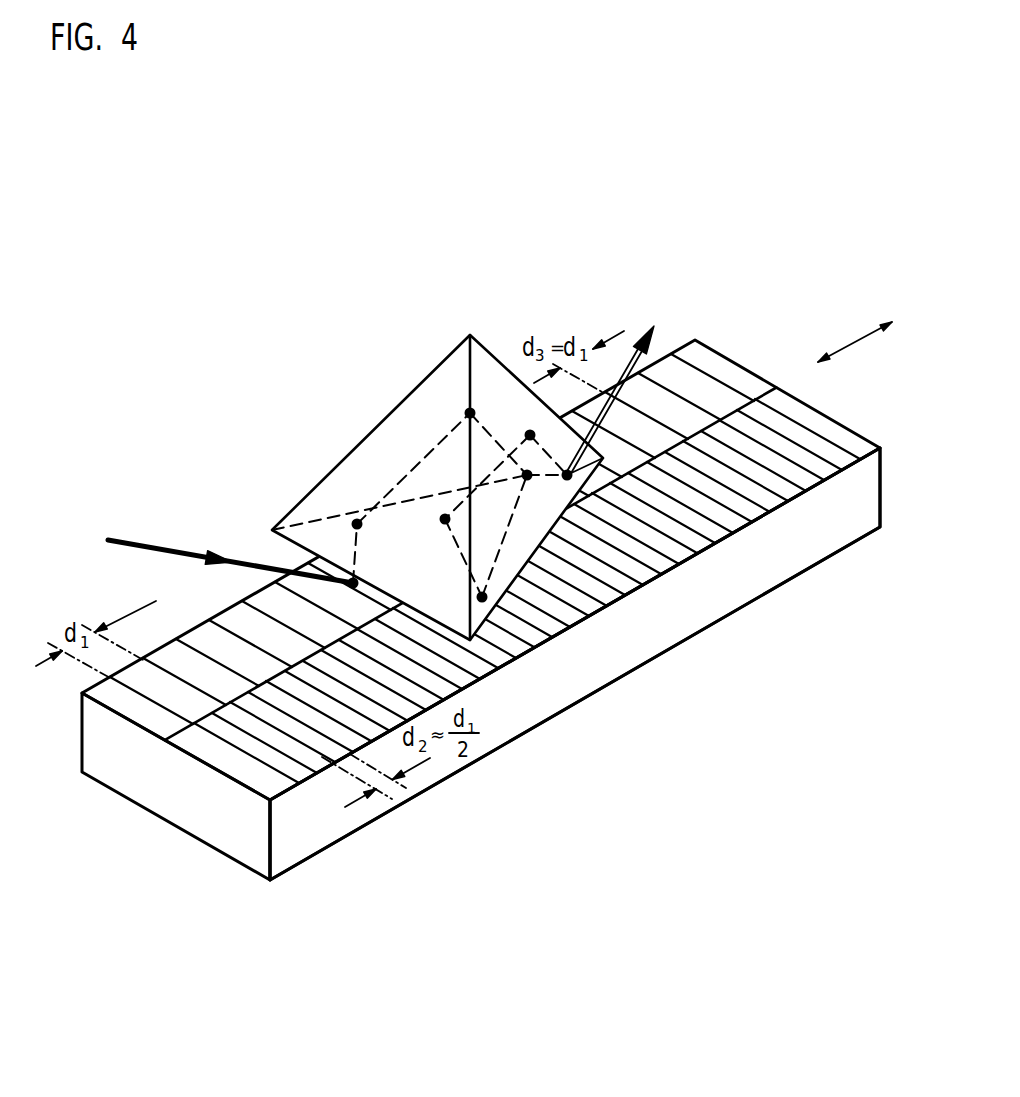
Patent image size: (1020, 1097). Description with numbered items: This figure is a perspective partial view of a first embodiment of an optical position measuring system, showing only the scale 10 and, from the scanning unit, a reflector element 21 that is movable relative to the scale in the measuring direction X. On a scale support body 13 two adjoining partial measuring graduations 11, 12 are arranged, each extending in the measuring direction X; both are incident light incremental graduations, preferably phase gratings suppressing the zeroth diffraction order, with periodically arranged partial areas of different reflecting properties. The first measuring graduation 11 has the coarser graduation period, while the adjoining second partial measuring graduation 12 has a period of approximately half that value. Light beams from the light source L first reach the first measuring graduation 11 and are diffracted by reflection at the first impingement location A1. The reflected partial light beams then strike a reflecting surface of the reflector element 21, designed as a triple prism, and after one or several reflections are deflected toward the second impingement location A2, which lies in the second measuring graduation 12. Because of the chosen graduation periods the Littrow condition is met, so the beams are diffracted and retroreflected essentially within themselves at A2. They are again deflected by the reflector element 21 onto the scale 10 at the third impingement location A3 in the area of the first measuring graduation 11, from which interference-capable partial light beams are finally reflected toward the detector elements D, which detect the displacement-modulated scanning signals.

The scale 10 is at (176, 833).
The first partial measuring graduation 11 is at (706, 377).
The second partial measuring graduation 12 is at (803, 447).
The scale support body 13 is at (720, 578).
The reflector element 21 is at (362, 420).
The first impingement location A1 is at (353, 583).
The second impingement location A2 is at (485, 600).
The third impingement location A3 is at (583, 493).
The light source L is at (57, 519).
The detector elements D is at (659, 271).
The measuring direction X is at (855, 332).